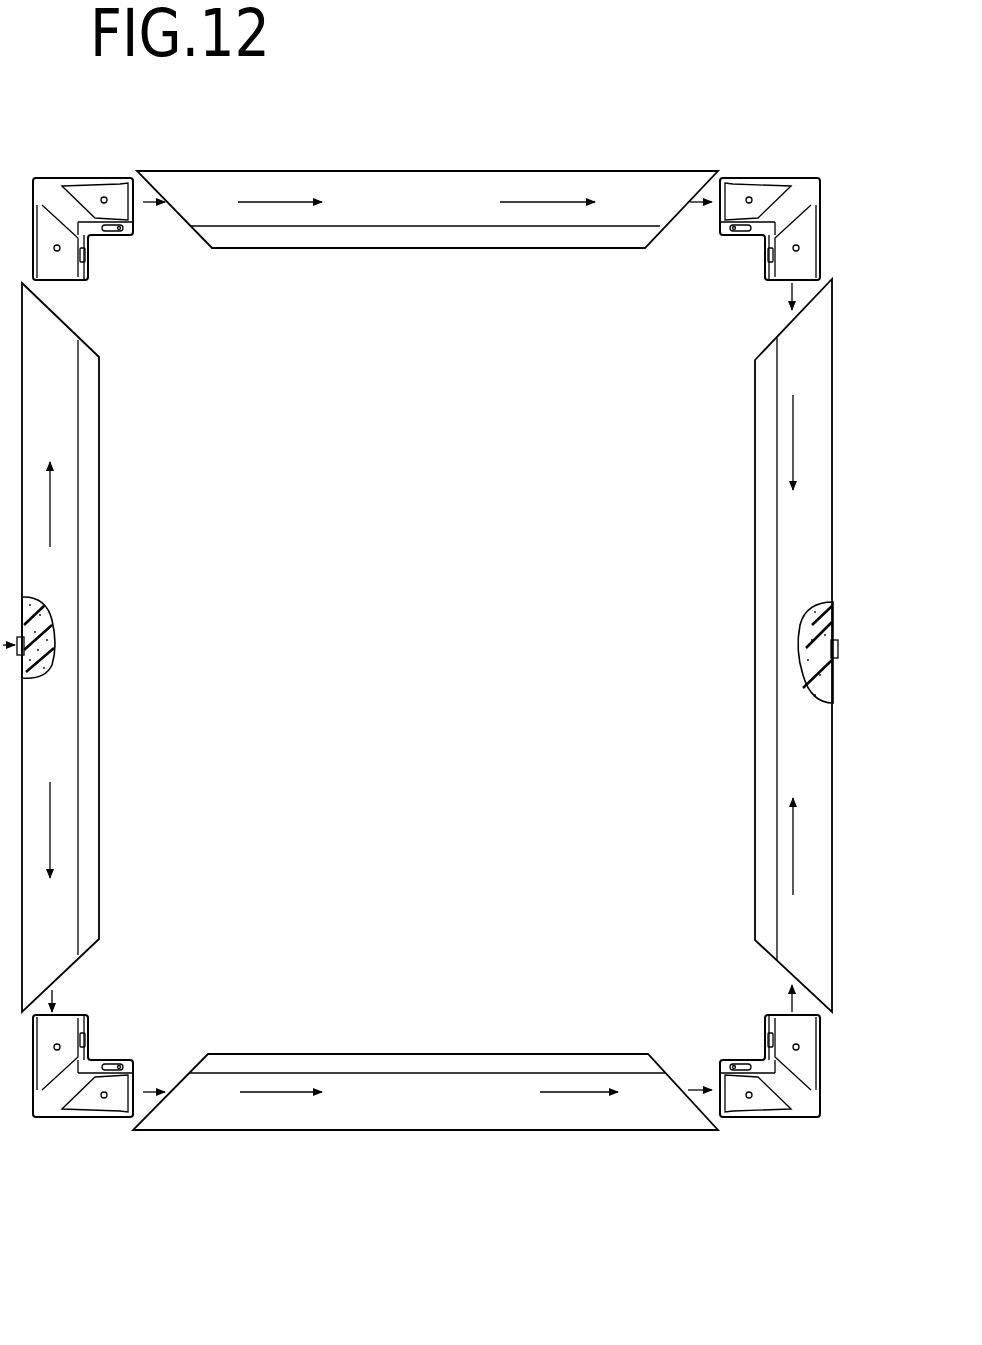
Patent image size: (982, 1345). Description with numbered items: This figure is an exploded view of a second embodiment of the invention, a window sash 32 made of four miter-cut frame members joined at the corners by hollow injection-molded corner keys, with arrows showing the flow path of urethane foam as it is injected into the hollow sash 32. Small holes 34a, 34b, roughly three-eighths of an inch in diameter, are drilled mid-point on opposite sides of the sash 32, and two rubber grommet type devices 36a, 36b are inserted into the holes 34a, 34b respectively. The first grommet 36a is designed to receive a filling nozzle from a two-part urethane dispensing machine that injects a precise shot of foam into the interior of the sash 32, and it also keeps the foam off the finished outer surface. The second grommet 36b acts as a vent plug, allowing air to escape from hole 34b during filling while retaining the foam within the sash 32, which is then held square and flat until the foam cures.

The window sash 32 is at (740, 1154).
The small hole 34a is at (25, 632).
The small hole 34b is at (810, 670).
The first grommet 36a is at (20, 655).
The second grommet 36b is at (834, 650).